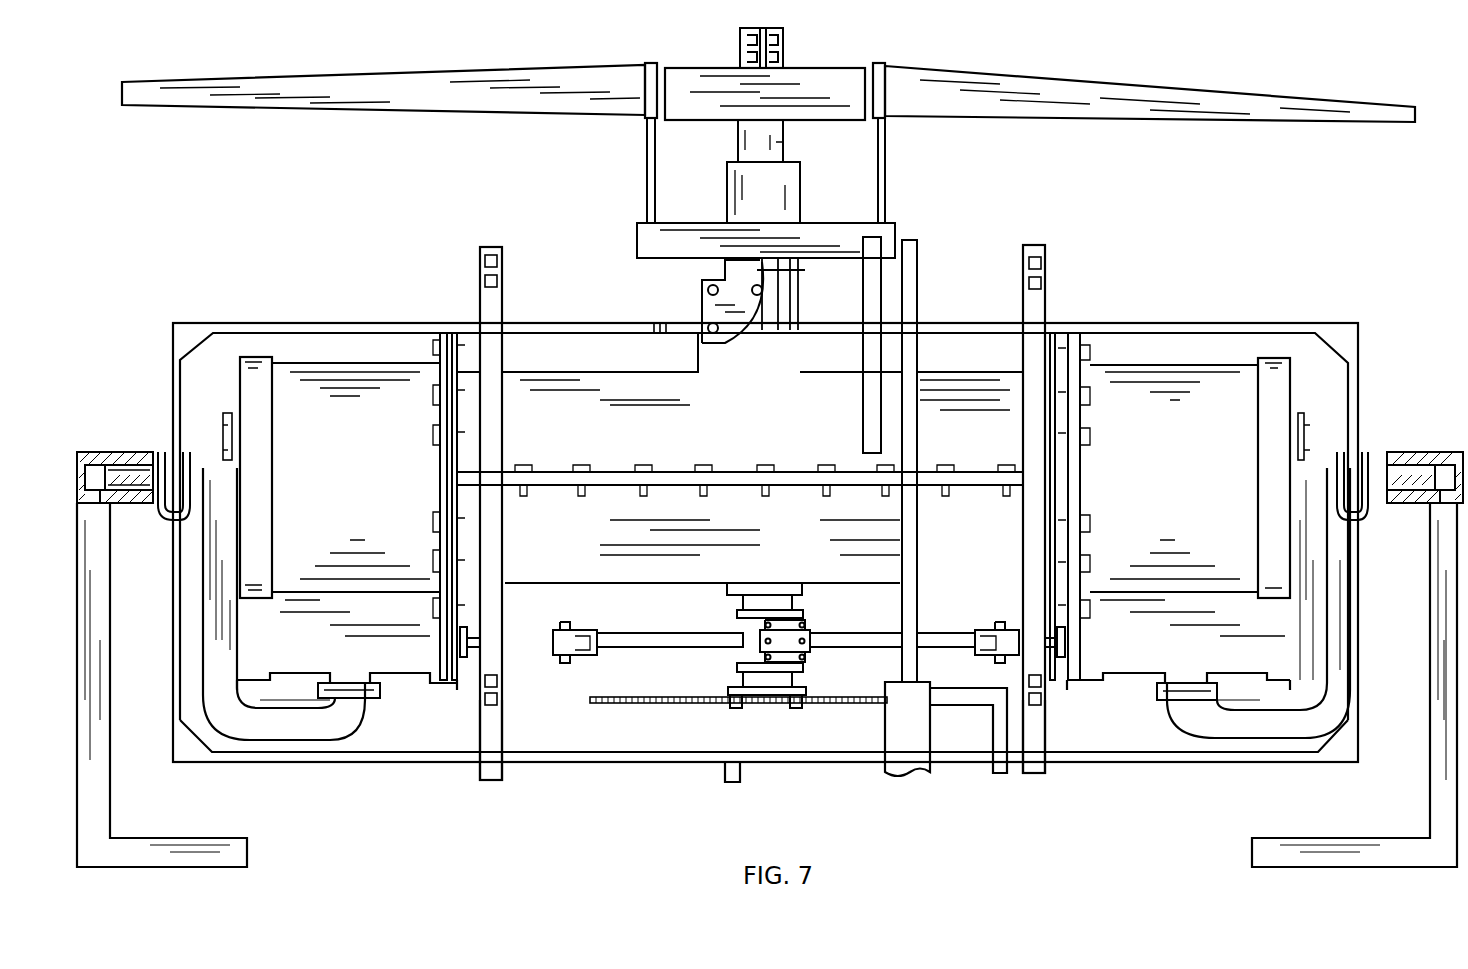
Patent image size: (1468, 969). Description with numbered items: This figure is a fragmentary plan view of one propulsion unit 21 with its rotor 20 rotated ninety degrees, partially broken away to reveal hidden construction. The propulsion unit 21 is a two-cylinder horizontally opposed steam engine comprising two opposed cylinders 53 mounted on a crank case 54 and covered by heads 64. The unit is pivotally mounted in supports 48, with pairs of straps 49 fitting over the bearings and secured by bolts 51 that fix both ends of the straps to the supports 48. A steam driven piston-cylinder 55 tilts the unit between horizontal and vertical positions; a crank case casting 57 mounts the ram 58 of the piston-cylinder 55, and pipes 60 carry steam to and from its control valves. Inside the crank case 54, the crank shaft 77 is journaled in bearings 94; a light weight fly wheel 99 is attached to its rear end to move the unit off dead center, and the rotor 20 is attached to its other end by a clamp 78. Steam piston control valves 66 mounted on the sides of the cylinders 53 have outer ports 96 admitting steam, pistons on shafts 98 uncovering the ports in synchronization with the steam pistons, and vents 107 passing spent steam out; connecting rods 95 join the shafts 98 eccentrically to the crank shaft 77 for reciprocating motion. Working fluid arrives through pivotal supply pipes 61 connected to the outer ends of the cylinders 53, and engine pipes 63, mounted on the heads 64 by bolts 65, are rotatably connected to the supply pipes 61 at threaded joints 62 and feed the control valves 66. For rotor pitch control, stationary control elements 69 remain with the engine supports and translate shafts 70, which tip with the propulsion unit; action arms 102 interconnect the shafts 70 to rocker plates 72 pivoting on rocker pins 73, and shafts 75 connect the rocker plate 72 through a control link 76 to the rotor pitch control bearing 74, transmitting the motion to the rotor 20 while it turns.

The rotor 20 is at (490, 102).
The propulsion unit 21 is at (1112, 318).
The support 48 is at (492, 772).
The strap 49 is at (494, 555).
The bolt 51 is at (500, 263).
The cylinder 53 is at (300, 390).
The crank case 54 is at (773, 190).
The piston-cylinder 55 is at (915, 760).
The crank case casting 57 is at (865, 302).
The ram 58 is at (915, 300).
The pipe 60 is at (981, 694).
The pivotal supply pipe 61 is at (98, 623).
The threaded joint 62 is at (142, 452).
The engine pipe 63 is at (217, 475).
The head 64 is at (255, 421).
The bolt 65 is at (228, 430).
The steam piston control valve 66 is at (400, 683).
The stationary control element 69 is at (307, 757).
The shaft 70 is at (315, 330).
The rocker plate 72 is at (725, 334).
The rocker pin 73 is at (706, 290).
The rotor pitch control bearing 74 is at (640, 250).
The shaft 75 is at (805, 270).
The control link 76 is at (645, 192).
The crank shaft 77 is at (762, 142).
The clamp 78 is at (783, 47).
The bearing 94 is at (728, 595).
The connecting rod 95 is at (672, 641).
The outer port 96 is at (355, 683).
The shaft 98 is at (512, 645).
The fly wheel 99 is at (710, 700).
The action arm 102 is at (698, 333).
The vent 107 is at (257, 683).